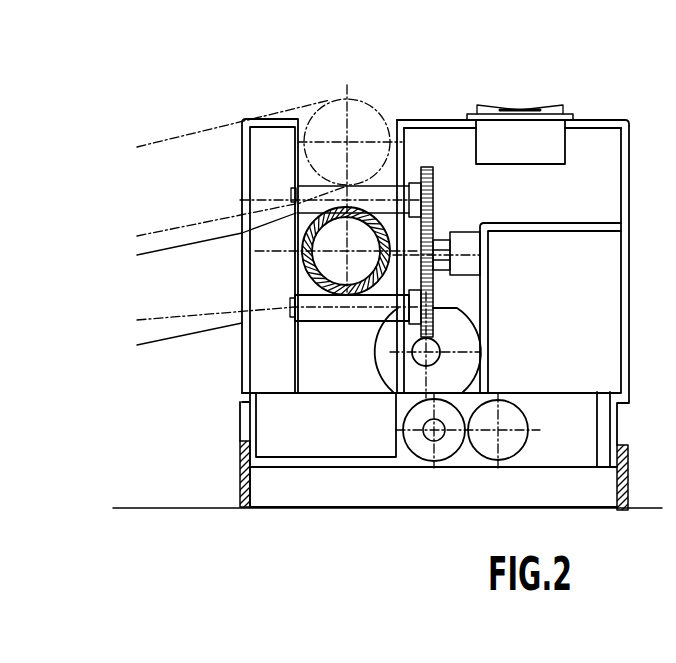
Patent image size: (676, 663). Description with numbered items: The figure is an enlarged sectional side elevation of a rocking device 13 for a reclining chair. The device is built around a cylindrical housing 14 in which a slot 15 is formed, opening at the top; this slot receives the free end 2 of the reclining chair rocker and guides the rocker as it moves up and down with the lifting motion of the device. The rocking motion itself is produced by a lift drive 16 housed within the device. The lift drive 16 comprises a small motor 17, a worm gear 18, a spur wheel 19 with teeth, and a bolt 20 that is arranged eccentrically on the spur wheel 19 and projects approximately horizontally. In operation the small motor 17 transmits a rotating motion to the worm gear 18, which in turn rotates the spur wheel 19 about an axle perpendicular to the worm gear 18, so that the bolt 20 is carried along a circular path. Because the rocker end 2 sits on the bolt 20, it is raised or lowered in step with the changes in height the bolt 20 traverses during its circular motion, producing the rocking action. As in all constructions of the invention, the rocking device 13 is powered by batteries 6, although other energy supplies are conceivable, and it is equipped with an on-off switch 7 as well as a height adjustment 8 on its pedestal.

The free end of the reclining chair rocker 2 is at (303, 263).
The batteries 6 is at (425, 450).
The on-off switch 7 is at (520, 104).
The height adjustment 8 is at (613, 478).
The rocking device 13 is at (598, 118).
The cylindrical housing 14 is at (423, 118).
The slot 15 is at (305, 179).
The lift drive 16 is at (500, 322).
The small motor 17 is at (387, 364).
The worm gear 18 is at (438, 360).
The spur wheel 19 is at (382, 331).
The bolt 20 is at (303, 328).